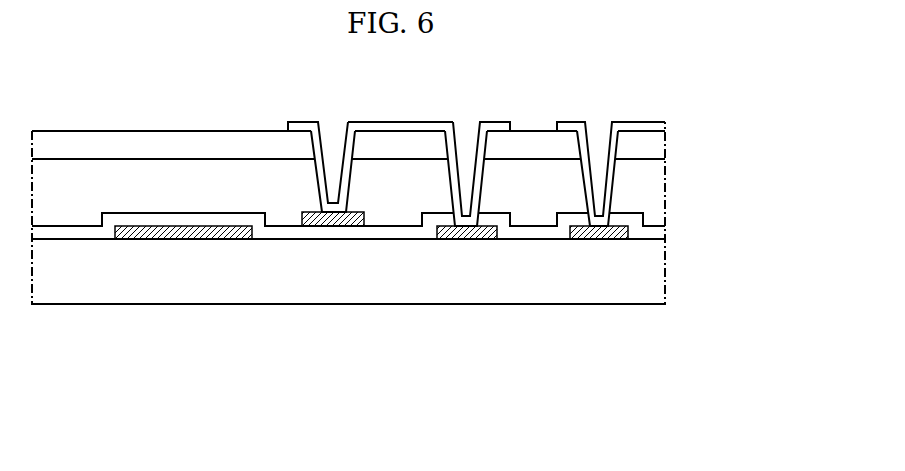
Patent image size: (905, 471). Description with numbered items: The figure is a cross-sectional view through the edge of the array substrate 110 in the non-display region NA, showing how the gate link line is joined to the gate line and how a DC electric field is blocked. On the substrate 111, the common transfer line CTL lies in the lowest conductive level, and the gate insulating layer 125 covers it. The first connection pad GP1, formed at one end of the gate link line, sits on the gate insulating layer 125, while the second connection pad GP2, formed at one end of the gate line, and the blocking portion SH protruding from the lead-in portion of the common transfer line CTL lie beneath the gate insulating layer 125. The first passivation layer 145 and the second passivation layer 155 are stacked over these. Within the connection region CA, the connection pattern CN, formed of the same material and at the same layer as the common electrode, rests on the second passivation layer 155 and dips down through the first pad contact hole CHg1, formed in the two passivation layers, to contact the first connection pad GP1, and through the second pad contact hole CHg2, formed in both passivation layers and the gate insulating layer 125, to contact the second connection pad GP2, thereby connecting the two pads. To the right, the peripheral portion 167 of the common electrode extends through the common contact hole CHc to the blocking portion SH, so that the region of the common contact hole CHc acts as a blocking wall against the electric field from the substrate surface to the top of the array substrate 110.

The array substrate 110 is at (330, 459).
The substrate 111 is at (653, 278).
The gate insulating layer 125 is at (653, 236).
The first passivation layer 145 is at (653, 193).
The second passivation layer 155 is at (653, 151).
The peripheral portion 167 is at (648, 127).
The common transfer line CTL is at (185, 234).
The first connection pad GP1 is at (335, 228).
The second connection pad GP2 is at (467, 235).
The blocking portion SH is at (602, 238).
The first pad contact hole CHg1 is at (330, 126).
The second pad contact hole CHg2 is at (463, 126).
The common contact hole CHc is at (597, 126).
The connection pattern CN is at (397, 127).
The connection region CA is at (509, 342).
The non-display region NA is at (32, 368).